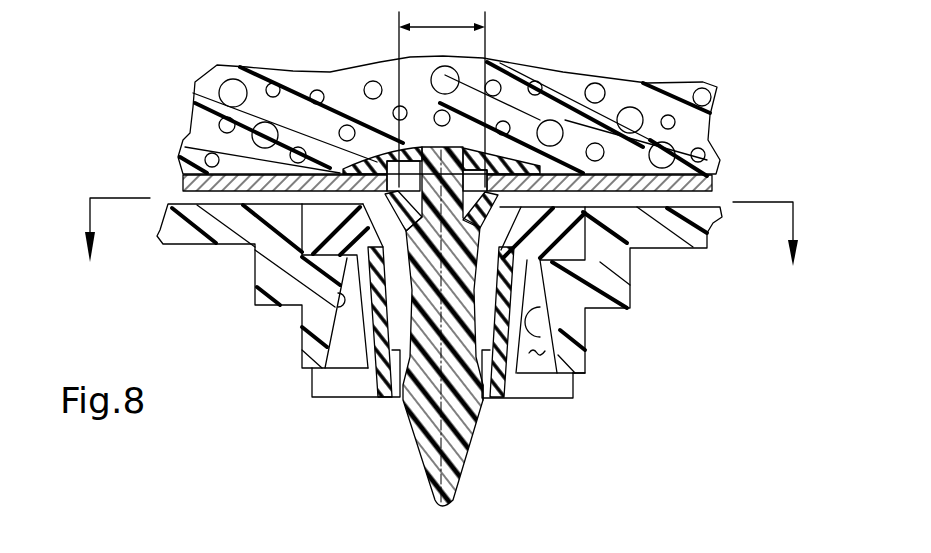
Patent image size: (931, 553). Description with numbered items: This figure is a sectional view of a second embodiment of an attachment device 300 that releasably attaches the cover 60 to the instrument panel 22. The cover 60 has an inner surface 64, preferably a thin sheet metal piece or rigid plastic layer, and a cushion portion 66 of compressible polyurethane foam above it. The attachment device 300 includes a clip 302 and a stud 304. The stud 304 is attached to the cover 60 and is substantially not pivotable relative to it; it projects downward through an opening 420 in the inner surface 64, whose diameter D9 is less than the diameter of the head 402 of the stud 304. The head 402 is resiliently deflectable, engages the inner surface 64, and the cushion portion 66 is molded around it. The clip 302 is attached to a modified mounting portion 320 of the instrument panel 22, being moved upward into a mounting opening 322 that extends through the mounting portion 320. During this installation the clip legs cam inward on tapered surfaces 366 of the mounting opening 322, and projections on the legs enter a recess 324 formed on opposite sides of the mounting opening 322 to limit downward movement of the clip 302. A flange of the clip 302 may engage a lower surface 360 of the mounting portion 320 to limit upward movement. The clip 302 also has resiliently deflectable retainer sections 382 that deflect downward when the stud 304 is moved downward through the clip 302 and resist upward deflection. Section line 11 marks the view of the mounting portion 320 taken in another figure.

The cover 60 is at (738, 75).
The cushion portion 66 is at (687, 132).
The inner surface 64 is at (715, 186).
The diameter of the opening D9 is at (442, 95).
The opening 420 is at (403, 147).
The head 402 is at (490, 163).
The attachment device 300 is at (386, 418).
The clip 302 is at (343, 326).
The stud 304 is at (390, 319).
The instrument panel 22 is at (178, 232).
The mounting portion 320 is at (700, 213).
The recess 324 is at (593, 290).
The tapered surfaces 366 is at (297, 312).
The mounting opening 322 is at (538, 358).
The lower surface 360 is at (583, 374).
The retainer sections 382 is at (481, 368).
The section line 11 is at (440, 247).